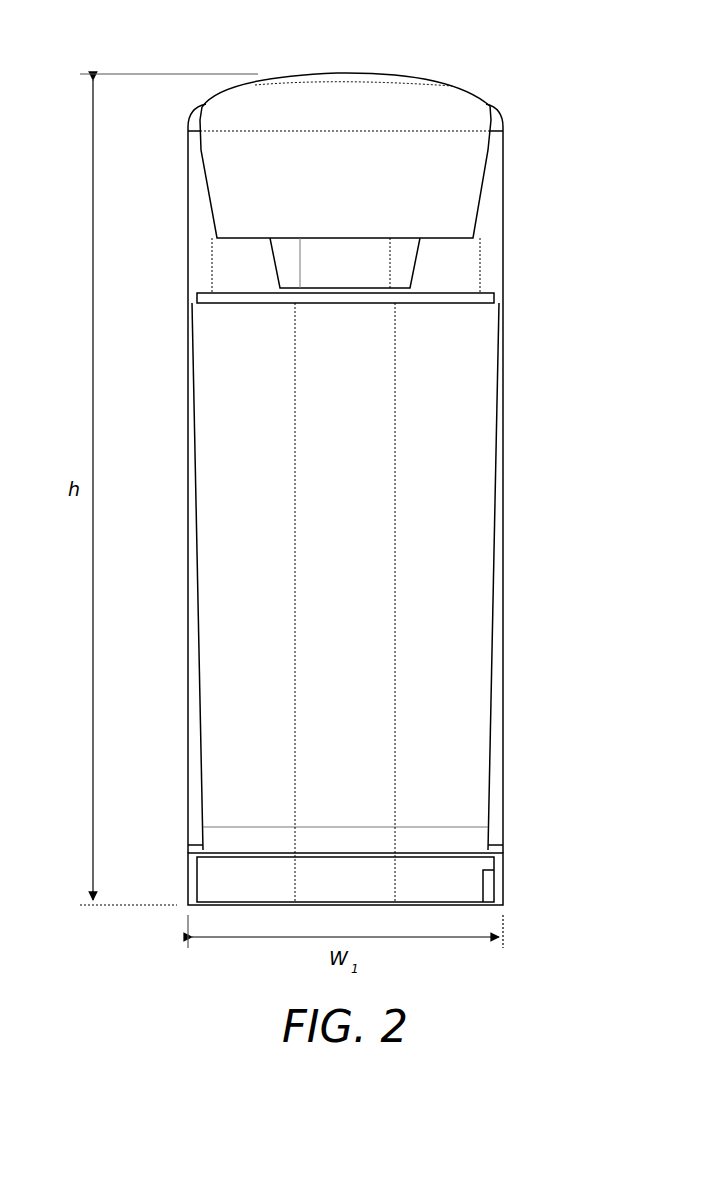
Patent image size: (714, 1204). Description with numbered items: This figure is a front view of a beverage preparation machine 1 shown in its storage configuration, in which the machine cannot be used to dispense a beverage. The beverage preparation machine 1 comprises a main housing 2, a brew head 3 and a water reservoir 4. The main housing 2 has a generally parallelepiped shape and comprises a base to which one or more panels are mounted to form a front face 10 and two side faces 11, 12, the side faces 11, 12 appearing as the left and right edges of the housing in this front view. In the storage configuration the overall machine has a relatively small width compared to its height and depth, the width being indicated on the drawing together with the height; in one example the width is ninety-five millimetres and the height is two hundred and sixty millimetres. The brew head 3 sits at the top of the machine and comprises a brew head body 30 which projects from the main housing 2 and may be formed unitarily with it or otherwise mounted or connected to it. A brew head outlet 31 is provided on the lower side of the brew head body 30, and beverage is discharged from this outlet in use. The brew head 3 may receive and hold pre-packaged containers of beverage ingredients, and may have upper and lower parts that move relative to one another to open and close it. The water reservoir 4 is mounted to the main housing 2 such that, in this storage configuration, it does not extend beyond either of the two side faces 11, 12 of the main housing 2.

The beverage preparation machine 1 is at (550, 217).
The main housing 2 is at (177, 241).
The brew head 3 is at (444, 60).
The water reservoir 4 is at (461, 674).
The front face 10 is at (465, 268).
The side face 11 is at (507, 560).
The side face 12 is at (185, 560).
The brew head body 30 is at (475, 100).
The brew head outlet 31 is at (287, 268).